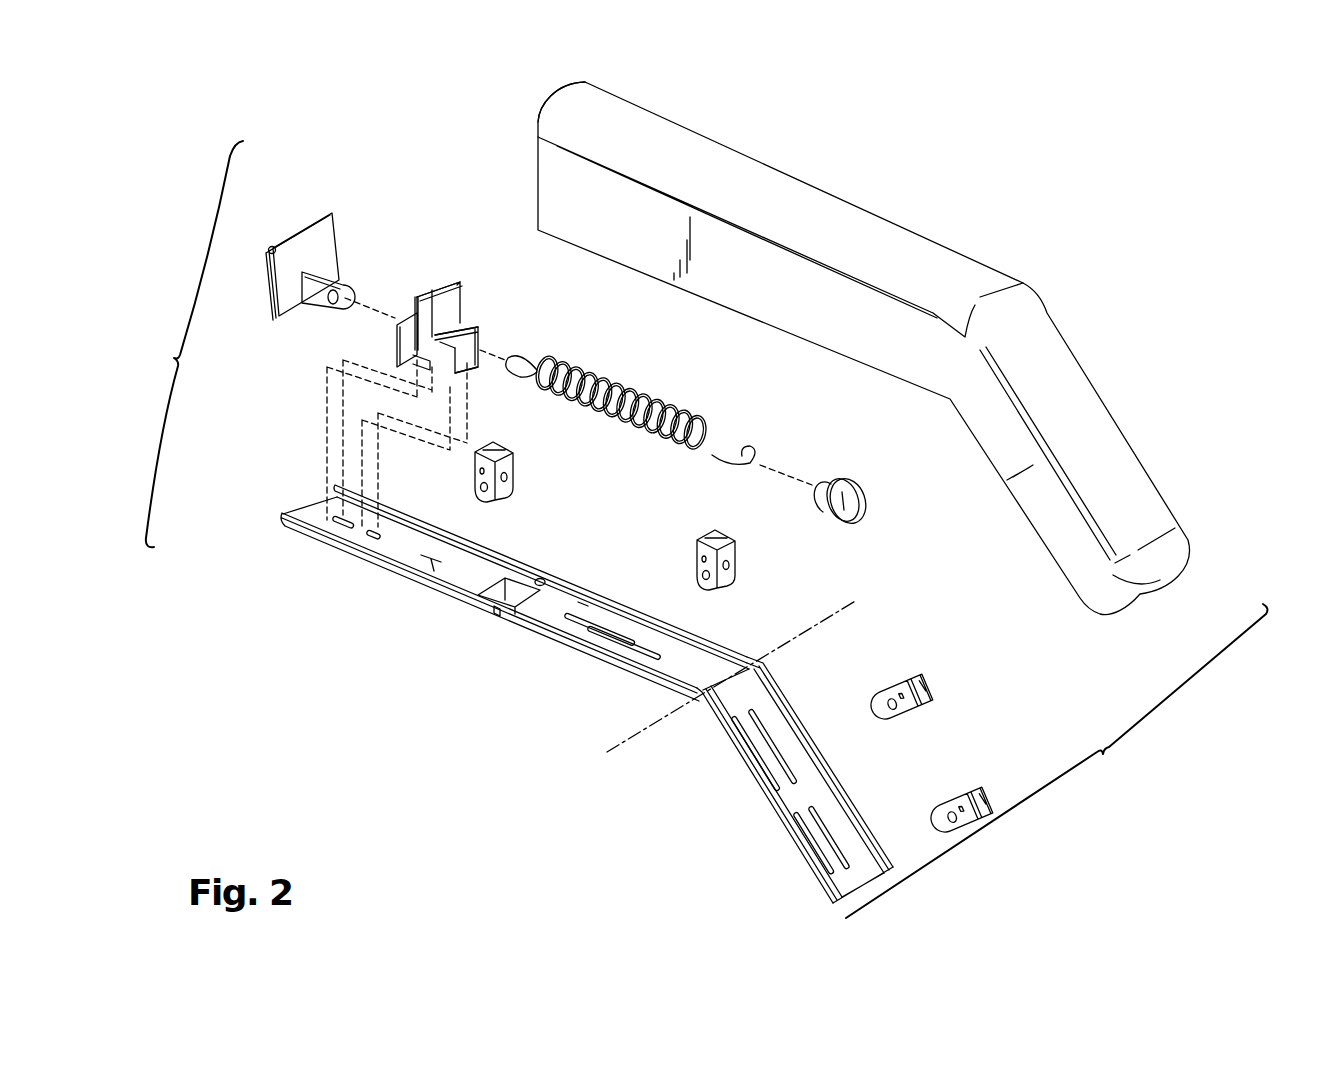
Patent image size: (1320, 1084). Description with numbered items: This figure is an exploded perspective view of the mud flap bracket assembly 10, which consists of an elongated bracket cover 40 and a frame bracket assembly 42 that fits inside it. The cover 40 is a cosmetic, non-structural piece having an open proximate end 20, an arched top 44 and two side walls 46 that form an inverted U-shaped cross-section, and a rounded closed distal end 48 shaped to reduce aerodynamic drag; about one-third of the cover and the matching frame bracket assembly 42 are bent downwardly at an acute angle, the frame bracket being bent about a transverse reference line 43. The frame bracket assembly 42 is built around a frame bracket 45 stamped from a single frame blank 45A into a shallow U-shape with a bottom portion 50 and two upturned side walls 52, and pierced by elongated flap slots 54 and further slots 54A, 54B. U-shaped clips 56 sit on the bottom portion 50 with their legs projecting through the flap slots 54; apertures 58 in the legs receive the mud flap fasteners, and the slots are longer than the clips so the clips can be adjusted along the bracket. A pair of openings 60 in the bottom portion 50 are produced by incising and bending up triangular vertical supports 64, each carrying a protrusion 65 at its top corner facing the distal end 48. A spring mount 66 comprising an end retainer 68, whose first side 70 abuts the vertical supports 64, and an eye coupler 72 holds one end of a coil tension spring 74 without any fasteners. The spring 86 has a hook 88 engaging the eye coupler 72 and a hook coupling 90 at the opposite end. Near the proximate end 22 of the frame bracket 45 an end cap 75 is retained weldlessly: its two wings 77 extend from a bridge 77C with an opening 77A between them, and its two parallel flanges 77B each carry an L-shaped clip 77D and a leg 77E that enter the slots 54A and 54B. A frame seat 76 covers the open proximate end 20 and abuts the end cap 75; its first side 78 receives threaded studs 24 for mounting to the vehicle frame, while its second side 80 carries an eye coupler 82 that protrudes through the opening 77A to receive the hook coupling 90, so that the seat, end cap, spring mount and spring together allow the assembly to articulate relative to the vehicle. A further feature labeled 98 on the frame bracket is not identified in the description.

The mud flap bracket assembly 10 is at (1056, 761).
The open proximate end 20 is at (538, 124).
The proximate end 22 is at (555, 680).
The threaded studs 24 is at (268, 251).
The elongated bracket cover 40 is at (826, 371).
The frame bracket assembly 42 is at (194, 344).
The transverse reference line 43 is at (637, 737).
The arched top 44 is at (880, 242).
The frame bracket 45 is at (316, 562).
The frame blank 45A is at (727, 640).
The side walls 46 is at (725, 143).
The rounded closed distal end 48 is at (1140, 591).
The bottom portion 50 is at (395, 530).
The side walls 52 is at (455, 548).
The flap slots 54 is at (432, 563).
The slot 54A is at (332, 516).
The slot 54B is at (372, 537).
The U-shaped clips 56 is at (730, 628).
The apertures 58 is at (507, 490).
The openings 60 is at (542, 577).
The vertical supports 64 is at (493, 583).
The protrusion 65 is at (580, 600).
The spring mount 66 is at (844, 496).
The end retainer 68 is at (852, 505).
The first side 70 is at (824, 513).
The eye coupler 72 is at (826, 486).
The coil tension spring 74 is at (659, 391).
The end cap 75 is at (472, 290).
The frame seat 76 is at (310, 249).
The wings 77 is at (436, 314).
The opening 77A is at (422, 294).
The flanges 77B is at (450, 347).
The bridge 77C is at (415, 303).
The L-shaped clip 77D is at (415, 365).
The leg 77E is at (467, 370).
The first side 78 is at (294, 231).
The second side 80 is at (320, 233).
The eye coupler 82 is at (322, 307).
The spring 86 is at (612, 380).
The hook 88 is at (749, 445).
The hook coupling 90 is at (508, 356).
The web opening 98 is at (640, 665).